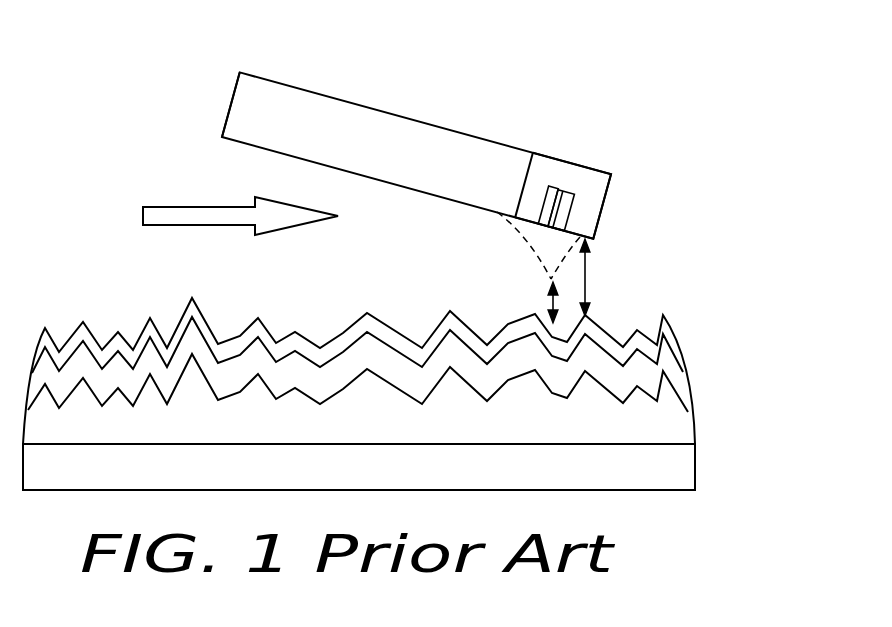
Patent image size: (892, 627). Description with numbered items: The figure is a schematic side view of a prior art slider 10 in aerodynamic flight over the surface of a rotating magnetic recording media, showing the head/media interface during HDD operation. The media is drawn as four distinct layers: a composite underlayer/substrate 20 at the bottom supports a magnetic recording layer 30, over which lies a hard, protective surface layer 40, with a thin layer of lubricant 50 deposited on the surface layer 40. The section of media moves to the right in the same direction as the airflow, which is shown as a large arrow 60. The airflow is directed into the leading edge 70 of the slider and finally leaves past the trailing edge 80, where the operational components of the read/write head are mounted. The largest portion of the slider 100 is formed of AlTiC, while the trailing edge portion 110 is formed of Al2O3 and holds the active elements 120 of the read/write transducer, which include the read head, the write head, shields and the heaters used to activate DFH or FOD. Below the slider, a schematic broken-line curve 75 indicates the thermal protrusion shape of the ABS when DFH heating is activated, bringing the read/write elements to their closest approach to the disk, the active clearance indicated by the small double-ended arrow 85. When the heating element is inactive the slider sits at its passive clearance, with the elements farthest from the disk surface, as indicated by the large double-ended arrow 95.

The slider 10 is at (373, 104).
The composite underlayer/substrate 20 is at (680, 467).
The magnetic recording layer 30 is at (680, 418).
The protective surface layer 40 is at (672, 370).
The layer of lubricant 50 is at (675, 332).
The arrow 60 is at (143, 211).
The leading edge 70 is at (233, 95).
The broken-line curve 75 is at (529, 234).
The trailing edge 80 is at (611, 187).
The small double-ended arrow 85 is at (550, 302).
The large double-ended arrow 95 is at (588, 270).
The largest portion of the slider 100 is at (460, 148).
The trailing edge portion 110 is at (569, 191).
The active elements 120 is at (554, 185).